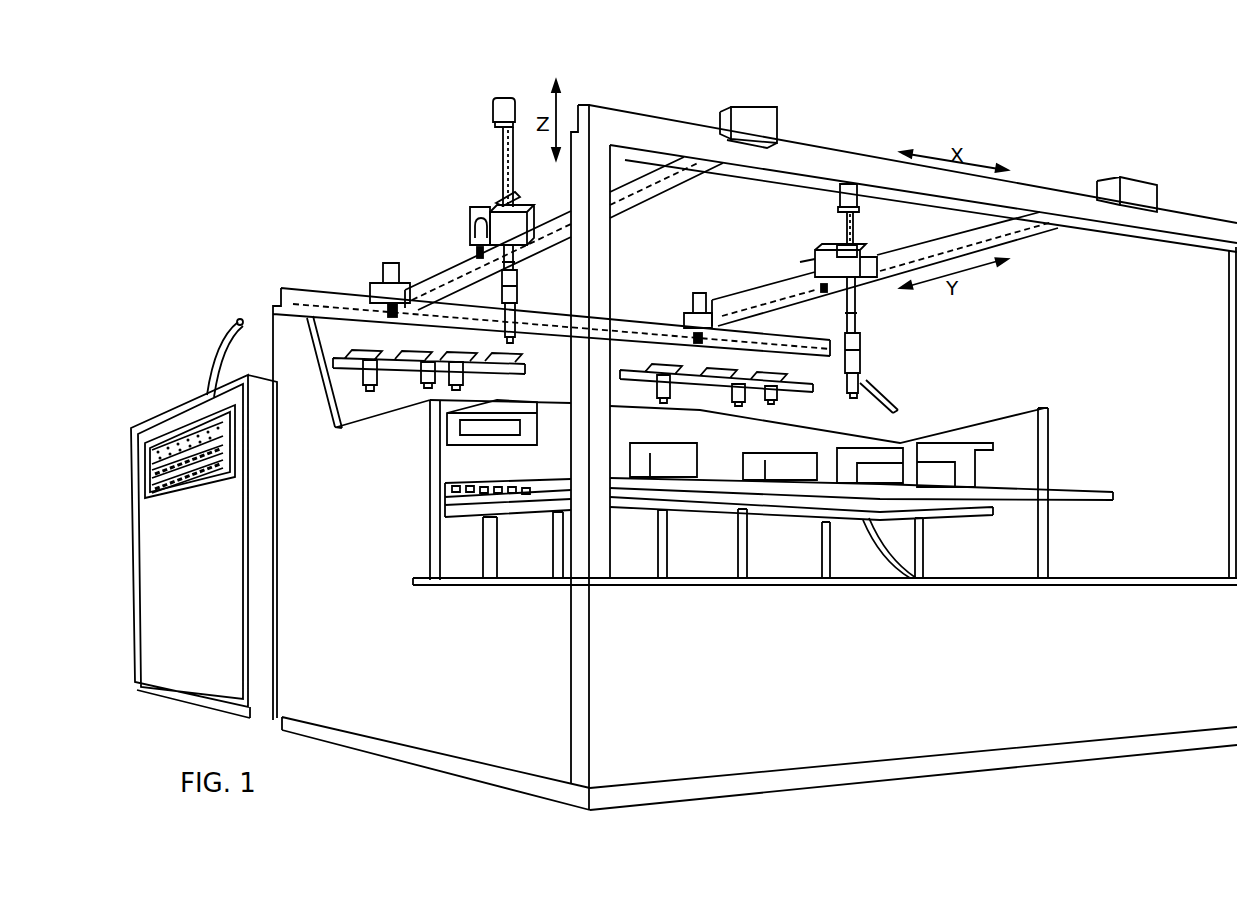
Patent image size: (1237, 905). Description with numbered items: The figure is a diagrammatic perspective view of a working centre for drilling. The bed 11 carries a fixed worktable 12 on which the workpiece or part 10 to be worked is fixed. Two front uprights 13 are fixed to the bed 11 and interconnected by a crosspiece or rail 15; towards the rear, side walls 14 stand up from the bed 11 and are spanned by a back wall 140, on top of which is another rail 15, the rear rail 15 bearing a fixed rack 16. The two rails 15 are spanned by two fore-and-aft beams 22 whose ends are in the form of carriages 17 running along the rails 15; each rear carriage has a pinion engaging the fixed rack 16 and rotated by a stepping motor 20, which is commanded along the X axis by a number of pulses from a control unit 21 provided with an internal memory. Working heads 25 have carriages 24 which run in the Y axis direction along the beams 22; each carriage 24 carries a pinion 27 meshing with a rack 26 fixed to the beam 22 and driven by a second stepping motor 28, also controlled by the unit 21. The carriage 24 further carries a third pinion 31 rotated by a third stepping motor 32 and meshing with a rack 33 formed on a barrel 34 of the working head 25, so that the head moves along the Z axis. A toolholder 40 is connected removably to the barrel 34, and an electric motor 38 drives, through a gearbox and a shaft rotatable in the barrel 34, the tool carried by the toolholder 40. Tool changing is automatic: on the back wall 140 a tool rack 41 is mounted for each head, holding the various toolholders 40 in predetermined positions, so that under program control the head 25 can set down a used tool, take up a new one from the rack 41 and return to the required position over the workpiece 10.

The workpiece 10 is at (948, 453).
The bed 11 is at (1090, 730).
The worktable 12 is at (1077, 493).
The front uprights 13 is at (606, 570).
The side walls 14 is at (428, 548).
The rail 15 is at (624, 114).
The fixed rack 16 is at (316, 300).
The carriages 17 is at (770, 120).
The stepping motor 20 is at (390, 263).
The control unit 21 is at (155, 402).
The fore-and-aft beams 22 is at (636, 175).
The carriage 24 is at (528, 212).
The working head 25 is at (658, 199).
The rack 26 is at (402, 288).
The pinion 27 is at (482, 259).
The second stepping motor 28 is at (473, 232).
The third pinion 31 is at (509, 204).
The third stepping motor 32 is at (486, 206).
The rack 33 is at (506, 130).
The barrel 34 is at (518, 262).
The electric motor 38 is at (504, 98).
The toolholder 40 is at (518, 315).
The tool rack 41 is at (404, 353).
The back wall 140 is at (290, 319).